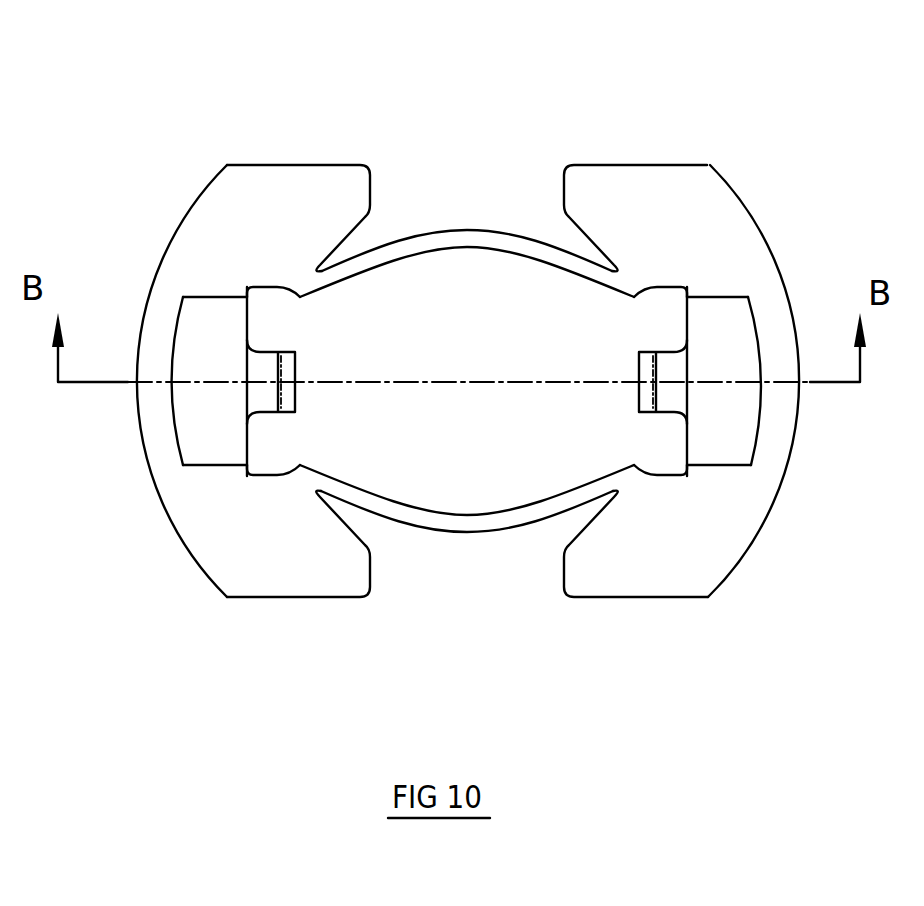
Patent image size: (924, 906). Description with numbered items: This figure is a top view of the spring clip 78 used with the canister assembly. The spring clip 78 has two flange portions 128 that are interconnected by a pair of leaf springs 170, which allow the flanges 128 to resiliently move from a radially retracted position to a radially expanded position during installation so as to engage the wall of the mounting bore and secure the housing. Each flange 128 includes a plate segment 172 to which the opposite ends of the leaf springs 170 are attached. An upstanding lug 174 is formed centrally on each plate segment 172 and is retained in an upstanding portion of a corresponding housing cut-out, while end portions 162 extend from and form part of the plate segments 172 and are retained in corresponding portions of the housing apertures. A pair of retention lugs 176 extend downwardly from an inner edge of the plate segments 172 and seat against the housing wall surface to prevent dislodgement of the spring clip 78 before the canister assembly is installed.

The spring clip 78 is at (677, 10).
The flange portion 128 is at (242, 172).
The end portion 162 is at (155, 313).
The leaf spring 170 is at (387, 252).
The plate segment 172 is at (313, 583).
The upstanding lug 174 is at (210, 432).
The retention lug 176 is at (288, 362).